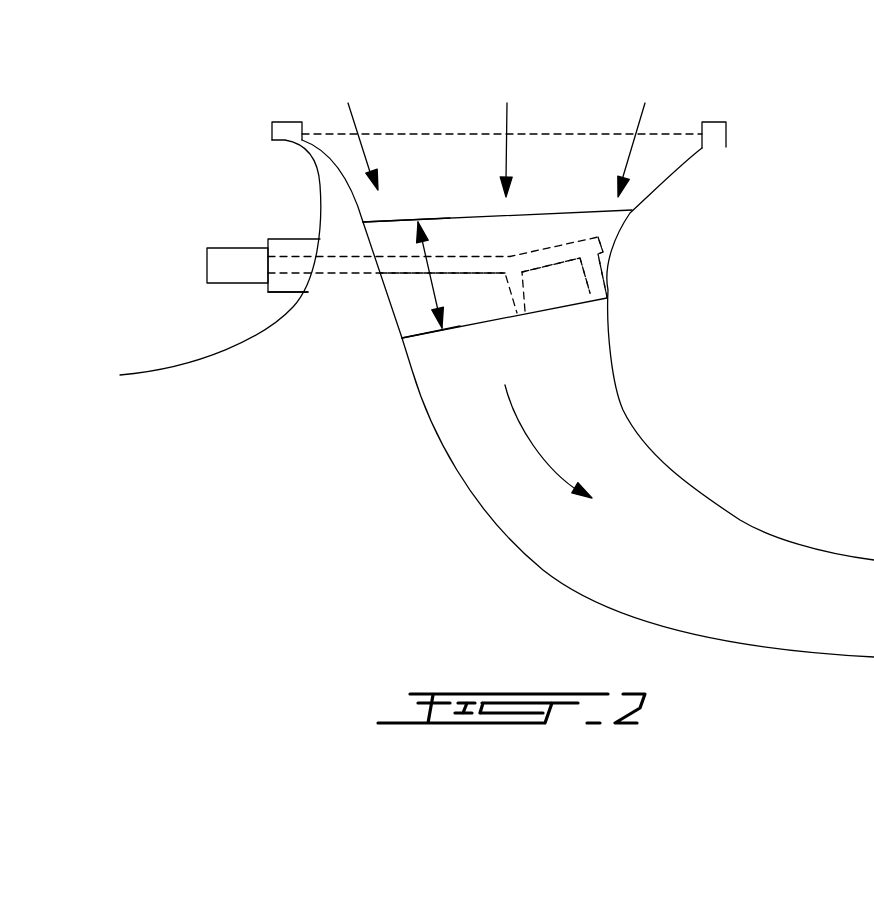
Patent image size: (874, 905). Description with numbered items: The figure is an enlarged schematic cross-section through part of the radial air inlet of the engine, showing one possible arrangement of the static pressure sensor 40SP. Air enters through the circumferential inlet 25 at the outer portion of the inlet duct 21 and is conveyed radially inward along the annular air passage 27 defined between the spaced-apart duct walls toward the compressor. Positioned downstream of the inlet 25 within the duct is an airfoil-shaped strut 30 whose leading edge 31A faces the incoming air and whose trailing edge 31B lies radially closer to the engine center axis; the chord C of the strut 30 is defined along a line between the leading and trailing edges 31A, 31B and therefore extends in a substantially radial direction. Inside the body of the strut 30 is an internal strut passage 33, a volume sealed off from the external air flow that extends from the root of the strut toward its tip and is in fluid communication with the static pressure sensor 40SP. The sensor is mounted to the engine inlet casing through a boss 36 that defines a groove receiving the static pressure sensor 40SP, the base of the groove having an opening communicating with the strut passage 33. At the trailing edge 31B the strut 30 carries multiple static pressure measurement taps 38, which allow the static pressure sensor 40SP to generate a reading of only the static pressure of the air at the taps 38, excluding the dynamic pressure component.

The inlet duct 21 is at (300, 157).
The inlet 25 is at (443, 162).
The air passage 27 is at (573, 427).
The strut 30 is at (627, 217).
The leading edge 31A is at (384, 220).
The trailing edge 31B is at (411, 337).
The strut passage 33 is at (397, 275).
The boss 36 is at (283, 283).
The static pressure measurement taps 38 is at (607, 298).
The static pressure sensor 40SP is at (227, 247).
The chord C is at (423, 275).